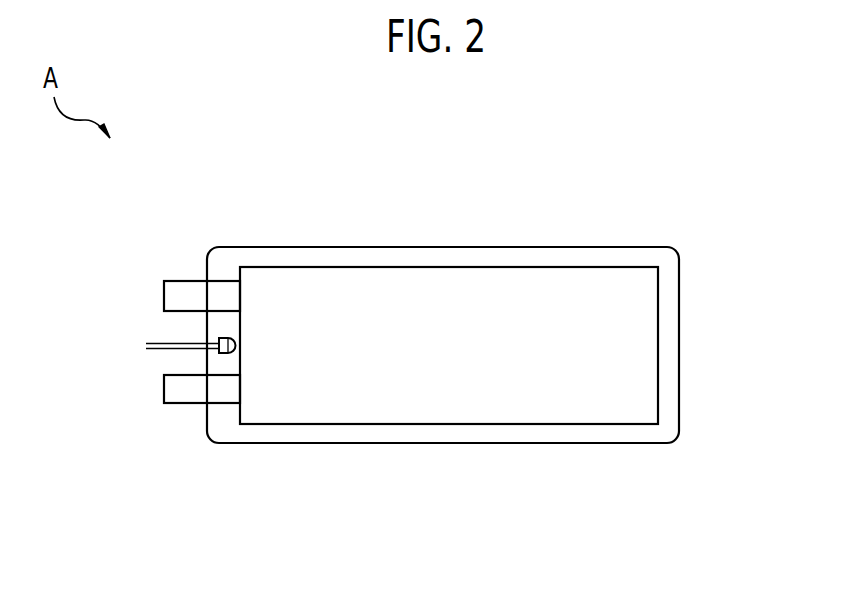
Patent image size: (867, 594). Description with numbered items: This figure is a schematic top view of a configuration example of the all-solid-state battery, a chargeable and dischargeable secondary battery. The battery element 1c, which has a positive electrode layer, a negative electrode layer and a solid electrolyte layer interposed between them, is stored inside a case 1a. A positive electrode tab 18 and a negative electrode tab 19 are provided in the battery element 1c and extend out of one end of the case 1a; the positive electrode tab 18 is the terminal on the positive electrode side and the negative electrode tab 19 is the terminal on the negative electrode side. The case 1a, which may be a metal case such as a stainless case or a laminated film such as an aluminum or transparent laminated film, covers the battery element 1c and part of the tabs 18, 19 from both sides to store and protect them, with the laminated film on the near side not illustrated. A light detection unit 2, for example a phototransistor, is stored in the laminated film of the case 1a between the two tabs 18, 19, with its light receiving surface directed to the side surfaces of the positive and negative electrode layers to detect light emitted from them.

The case 1a is at (471, 247).
The battery element 1c is at (598, 267).
The positive electrode tab 18 is at (187, 297).
The negative electrode tab 19 is at (186, 390).
The light detection unit 2 is at (224, 355).